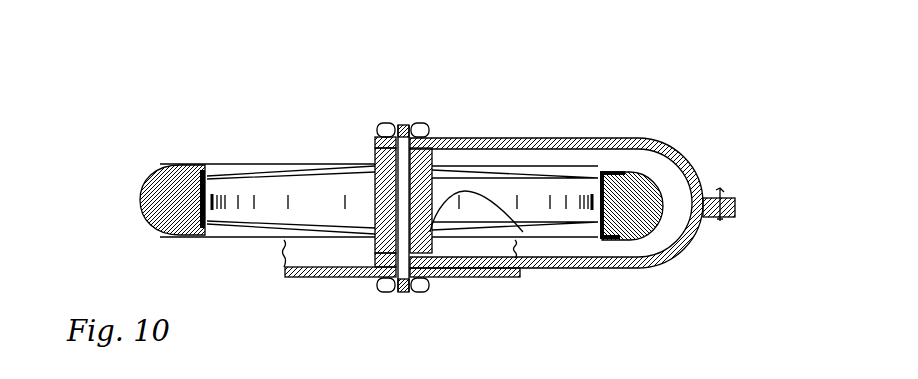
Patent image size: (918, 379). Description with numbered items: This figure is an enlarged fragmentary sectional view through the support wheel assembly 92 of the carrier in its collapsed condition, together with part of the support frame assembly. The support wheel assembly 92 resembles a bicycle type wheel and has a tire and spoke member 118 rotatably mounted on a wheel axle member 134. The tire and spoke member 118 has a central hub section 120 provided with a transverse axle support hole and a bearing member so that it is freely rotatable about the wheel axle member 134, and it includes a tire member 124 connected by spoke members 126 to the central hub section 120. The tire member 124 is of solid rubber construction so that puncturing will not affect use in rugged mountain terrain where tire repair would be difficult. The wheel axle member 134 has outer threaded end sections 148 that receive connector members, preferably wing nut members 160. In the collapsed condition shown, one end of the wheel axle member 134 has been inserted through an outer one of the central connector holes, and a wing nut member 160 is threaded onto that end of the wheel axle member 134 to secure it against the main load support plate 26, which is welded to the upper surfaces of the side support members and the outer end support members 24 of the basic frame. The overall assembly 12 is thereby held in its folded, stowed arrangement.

The gauge assembly 12 is at (465, 100).
The outer end support member 24 is at (295, 252).
The main load support plate 26 is at (285, 270).
The support wheel assembly 92 is at (655, 143).
The tire and spoke member 118 is at (610, 243).
The central hub section 120 is at (523, 232).
The tire member 124 is at (626, 172).
The spoke member 126 is at (458, 168).
The wheel axle member 134 is at (512, 258).
The outer threaded end section 148 is at (398, 126).
The wing nut member 160 is at (380, 131).